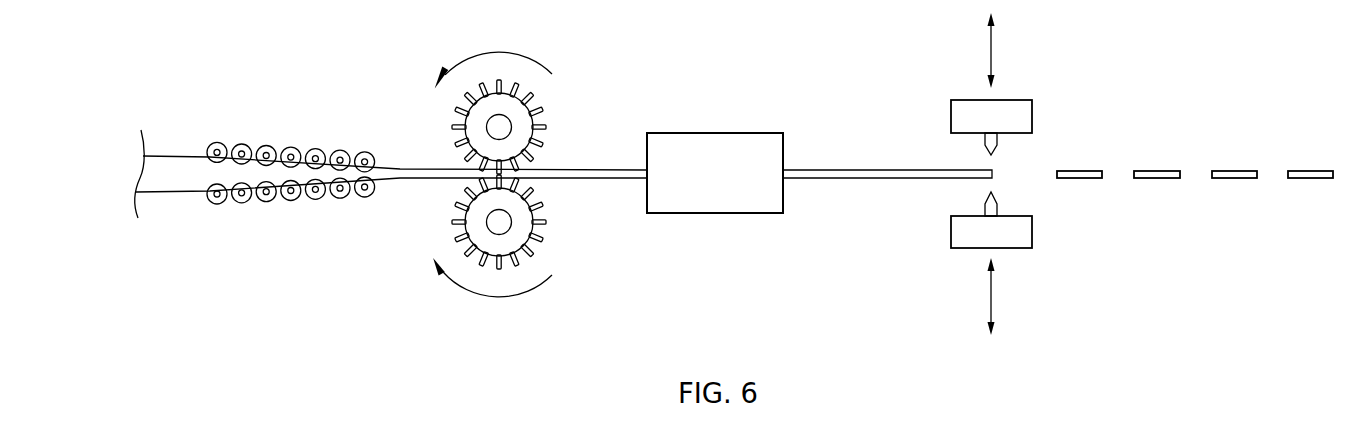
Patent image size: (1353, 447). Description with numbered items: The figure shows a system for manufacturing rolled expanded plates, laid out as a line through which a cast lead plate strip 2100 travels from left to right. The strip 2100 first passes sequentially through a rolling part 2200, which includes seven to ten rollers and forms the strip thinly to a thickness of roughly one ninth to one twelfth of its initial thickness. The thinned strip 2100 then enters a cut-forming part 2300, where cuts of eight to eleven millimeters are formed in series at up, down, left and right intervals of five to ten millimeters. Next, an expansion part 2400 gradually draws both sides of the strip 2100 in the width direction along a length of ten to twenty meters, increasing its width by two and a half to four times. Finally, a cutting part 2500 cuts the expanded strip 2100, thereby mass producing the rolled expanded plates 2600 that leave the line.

The cast lead plate strip 2100 is at (173, 182).
The rolling part 2200 is at (300, 113).
The cut-forming part 2300 is at (527, 120).
The expansion part 2400 is at (727, 147).
The cutting part 2500 is at (1025, 112).
The rolled expanded plates 2600 is at (1232, 177).